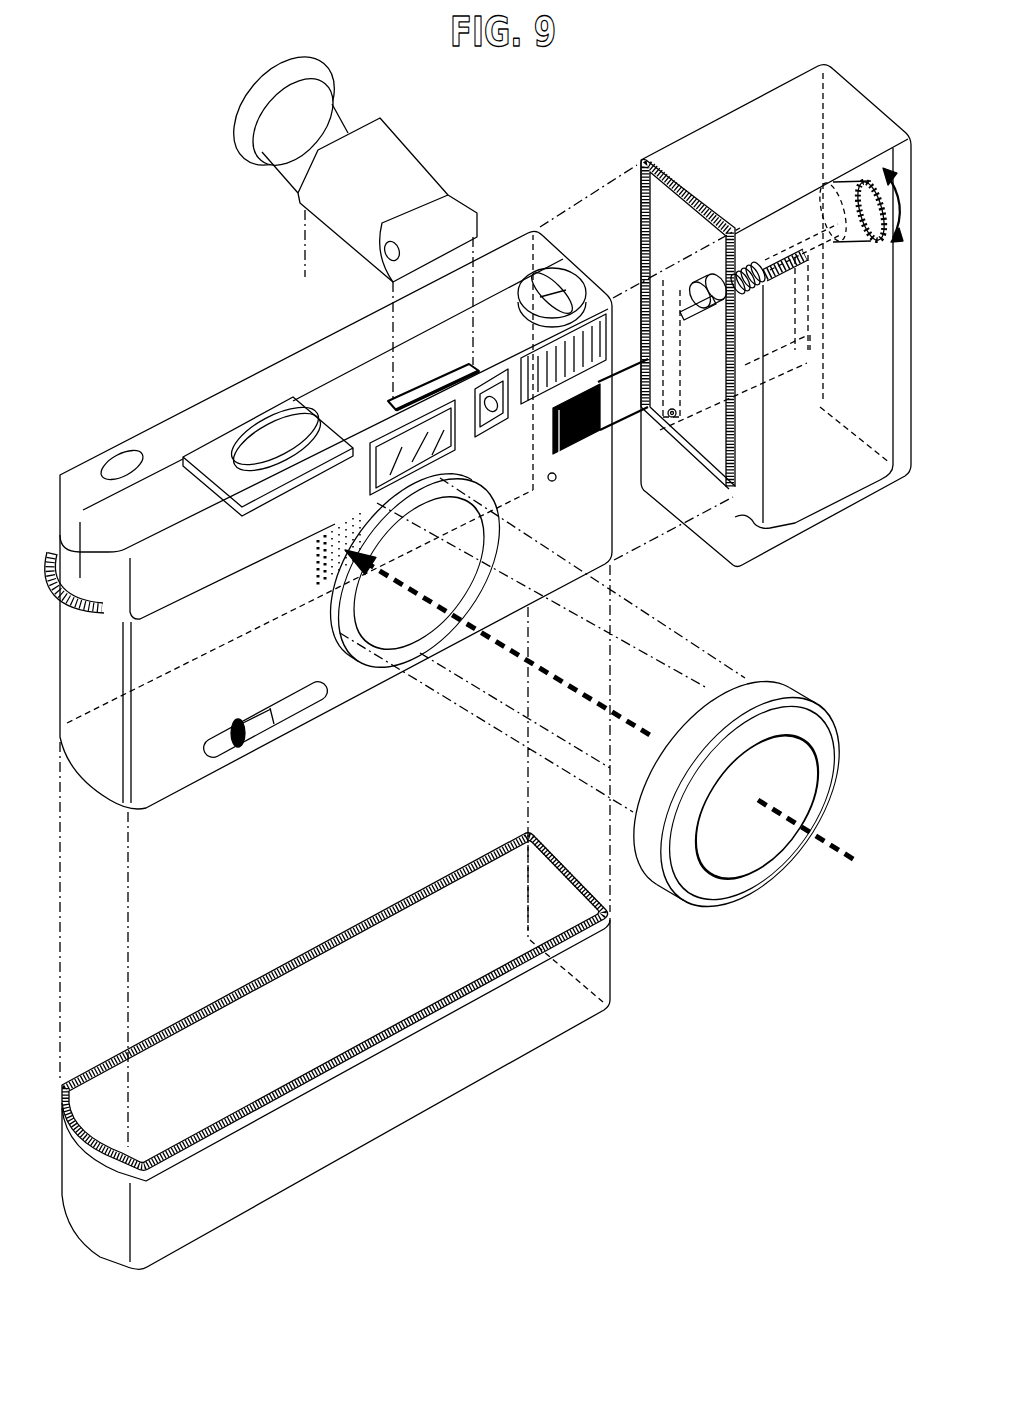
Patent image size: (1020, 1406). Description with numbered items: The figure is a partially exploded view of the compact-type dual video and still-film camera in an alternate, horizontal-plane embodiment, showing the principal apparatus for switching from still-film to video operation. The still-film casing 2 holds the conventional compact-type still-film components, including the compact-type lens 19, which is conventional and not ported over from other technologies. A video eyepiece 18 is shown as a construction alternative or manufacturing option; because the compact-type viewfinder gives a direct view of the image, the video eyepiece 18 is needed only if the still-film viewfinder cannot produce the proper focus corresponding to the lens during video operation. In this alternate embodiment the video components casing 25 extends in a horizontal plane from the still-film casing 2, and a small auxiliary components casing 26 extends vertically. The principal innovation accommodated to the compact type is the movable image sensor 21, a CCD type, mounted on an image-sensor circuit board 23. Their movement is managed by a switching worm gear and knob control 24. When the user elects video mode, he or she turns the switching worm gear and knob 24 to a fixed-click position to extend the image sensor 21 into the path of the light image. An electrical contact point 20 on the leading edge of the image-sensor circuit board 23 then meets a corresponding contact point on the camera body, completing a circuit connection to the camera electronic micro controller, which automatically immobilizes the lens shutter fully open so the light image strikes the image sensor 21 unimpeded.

The still-film casing 2 is at (192, 358).
The video eyepiece 18 is at (424, 158).
The compact-type lens 19 is at (813, 673).
The electrical contact point 20 is at (668, 418).
The movable image sensor 21 is at (541, 444).
The image-sensor circuit board 23 is at (784, 388).
The switching worm gear and knob control 24 is at (769, 238).
The video components casing 25 is at (700, 118).
The auxiliary components casing 26 is at (397, 1130).